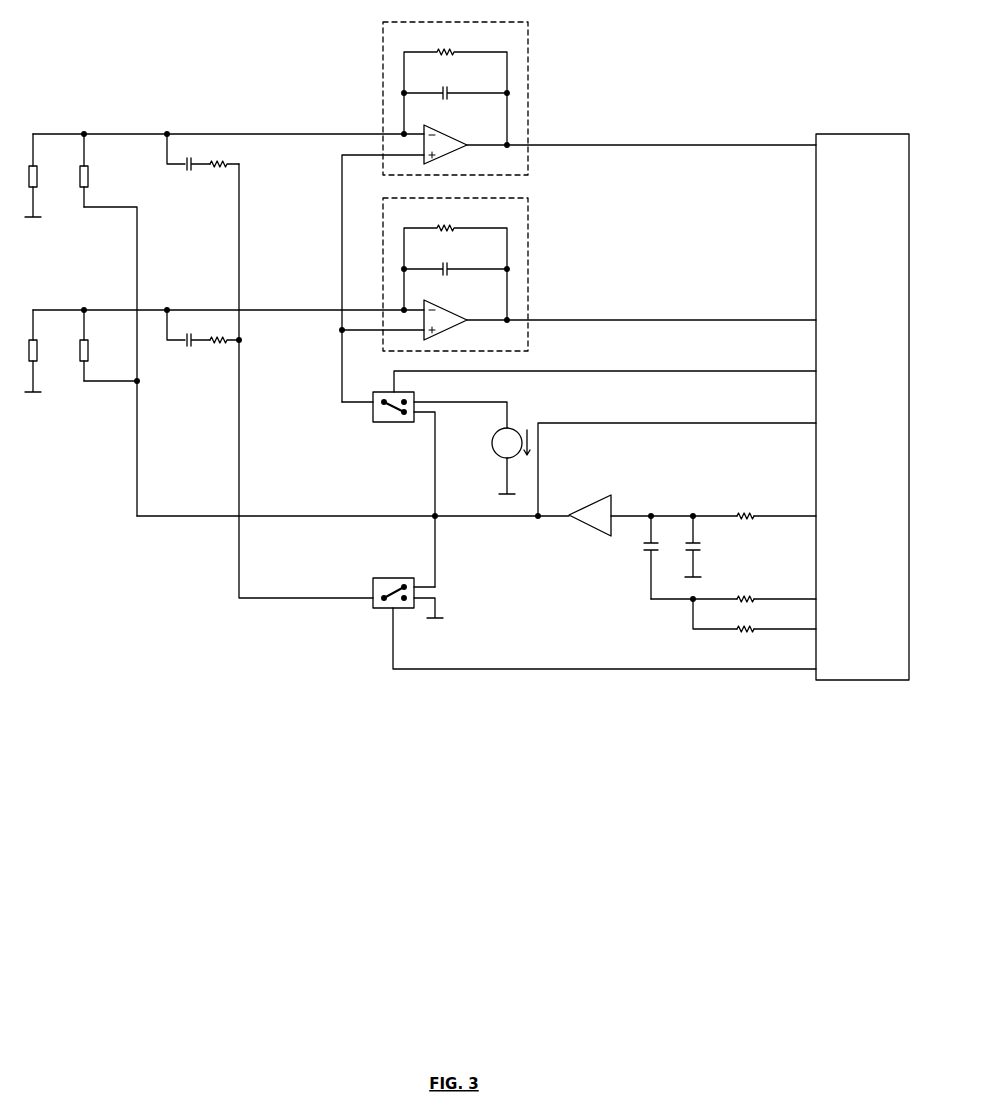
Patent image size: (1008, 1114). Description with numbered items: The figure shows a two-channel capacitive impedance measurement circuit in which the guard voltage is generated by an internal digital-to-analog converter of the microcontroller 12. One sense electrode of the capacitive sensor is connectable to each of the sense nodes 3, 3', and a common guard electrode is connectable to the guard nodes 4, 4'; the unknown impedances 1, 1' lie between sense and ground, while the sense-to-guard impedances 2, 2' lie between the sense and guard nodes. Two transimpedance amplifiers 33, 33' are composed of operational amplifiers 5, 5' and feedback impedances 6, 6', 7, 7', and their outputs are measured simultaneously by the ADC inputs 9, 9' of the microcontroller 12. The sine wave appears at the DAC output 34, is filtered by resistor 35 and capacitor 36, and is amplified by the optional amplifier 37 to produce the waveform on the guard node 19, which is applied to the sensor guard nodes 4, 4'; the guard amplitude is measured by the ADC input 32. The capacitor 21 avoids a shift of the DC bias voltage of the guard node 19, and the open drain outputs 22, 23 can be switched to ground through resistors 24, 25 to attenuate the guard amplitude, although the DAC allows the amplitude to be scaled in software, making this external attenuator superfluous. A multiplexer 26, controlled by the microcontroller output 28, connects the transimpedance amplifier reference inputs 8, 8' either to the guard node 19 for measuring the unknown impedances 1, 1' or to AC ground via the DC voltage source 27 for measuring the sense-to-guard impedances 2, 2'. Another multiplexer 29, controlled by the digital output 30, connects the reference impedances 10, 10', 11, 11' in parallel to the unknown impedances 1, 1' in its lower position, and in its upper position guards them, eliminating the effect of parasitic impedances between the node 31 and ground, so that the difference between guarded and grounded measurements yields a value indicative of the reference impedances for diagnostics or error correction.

The unknown impedance 1 is at (27, 175).
The sense-to-guard impedance 2 is at (76, 170).
The sense node 3 is at (228, 126).
The guard node 4 is at (110, 352).
The reference impedance 10 is at (188, 152).
The reference impedance 11 is at (224, 154).
The unknown impedance 1' is at (25, 351).
The sense-to-guard impedance 2' is at (75, 345).
The sense node 3' is at (228, 301).
The guard node 4' is at (111, 373).
The reference impedance 10' is at (188, 328).
The reference impedance 11' is at (225, 330).
The transimpedance amplifier 33 is at (435, 202).
The feedback impedance 7 is at (455, 88).
The feedback impedance 6 is at (456, 81).
The operational amplifier 5 is at (466, 137).
The transimpedance amplifier reference input 8 is at (383, 278).
The transimpedance amplifier 33' is at (434, 265).
The feedback impedance 7' is at (455, 263).
The feedback impedance 6' is at (456, 257).
The operational amplifier 5' is at (466, 313).
The transimpedance amplifier reference input 8' is at (382, 340).
The ADC input 9 is at (641, 135).
The ADC input 9' is at (641, 310).
The microcontroller 12 is at (863, 397).
The microcontroller output 28 is at (605, 372).
The ADC input 32 is at (676, 461).
The multiplexer 26 is at (424, 481).
The DC voltage source 27 is at (505, 454).
The guard node 19 is at (353, 507).
The amplifier 37 is at (581, 512).
The resistor 35 is at (744, 506).
The DAC output 34 is at (713, 507).
The capacitor 21 is at (639, 557).
The capacitor 36 is at (703, 546).
The resistor 24 is at (744, 589).
The open drain output 22 is at (733, 590).
The resistor 25 is at (744, 619).
The open drain output 23 is at (754, 614).
The multiplexer 29 is at (408, 589).
The node 31 is at (306, 381).
The digital output 30 is at (604, 638).